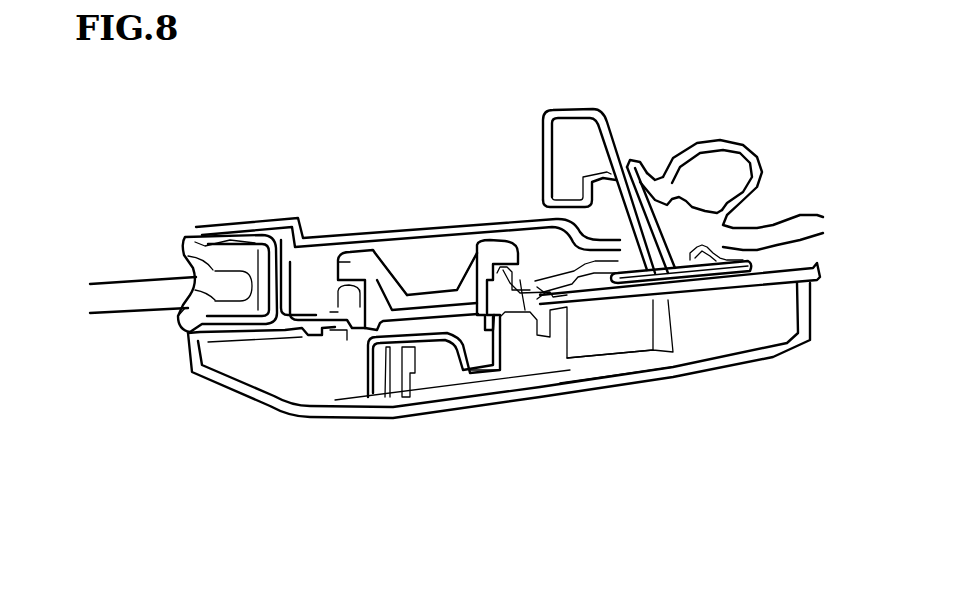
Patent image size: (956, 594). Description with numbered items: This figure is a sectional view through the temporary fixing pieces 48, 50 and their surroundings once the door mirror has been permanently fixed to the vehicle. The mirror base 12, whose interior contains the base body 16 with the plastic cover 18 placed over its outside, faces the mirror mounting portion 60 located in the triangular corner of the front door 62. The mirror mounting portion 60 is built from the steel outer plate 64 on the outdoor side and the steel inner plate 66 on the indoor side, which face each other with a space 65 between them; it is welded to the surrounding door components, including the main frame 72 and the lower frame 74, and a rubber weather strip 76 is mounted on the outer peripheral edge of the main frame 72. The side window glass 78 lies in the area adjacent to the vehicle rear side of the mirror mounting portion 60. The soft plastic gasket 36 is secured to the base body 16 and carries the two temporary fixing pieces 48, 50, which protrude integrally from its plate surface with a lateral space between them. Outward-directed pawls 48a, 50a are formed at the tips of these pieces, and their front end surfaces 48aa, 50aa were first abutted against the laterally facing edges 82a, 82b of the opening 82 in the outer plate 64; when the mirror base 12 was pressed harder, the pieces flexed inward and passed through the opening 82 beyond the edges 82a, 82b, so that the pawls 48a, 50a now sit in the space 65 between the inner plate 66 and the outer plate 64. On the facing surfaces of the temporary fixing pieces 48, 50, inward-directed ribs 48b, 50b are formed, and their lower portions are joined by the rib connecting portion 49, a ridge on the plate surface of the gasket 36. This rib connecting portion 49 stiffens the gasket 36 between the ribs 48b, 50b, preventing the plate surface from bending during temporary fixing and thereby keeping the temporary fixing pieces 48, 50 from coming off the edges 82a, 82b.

The mirror base 12 is at (208, 407).
The base body 16 is at (617, 358).
The cover 18 is at (590, 382).
The gasket 36 is at (627, 298).
The temporary fixing piece 48 is at (482, 262).
The pawl 48a is at (484, 270).
The front end surface 48aa is at (507, 250).
The rib 48b is at (467, 283).
The rib connecting portion 49 is at (433, 283).
The temporary fixing piece 50 is at (369, 262).
The pawl 50a is at (370, 275).
The front end surface 50aa is at (339, 270).
The rib 50b is at (398, 293).
The mirror mounting portion 60 is at (317, 223).
The front door 62 is at (158, 333).
The outer plate 64 is at (540, 290).
The space 65 is at (313, 273).
The inner plate 66 is at (343, 270).
The main frame 72 is at (607, 137).
The lower frame 74 is at (231, 234).
The weather strip 76 is at (727, 145).
The side window glass 78 is at (135, 290).
The opening 82 is at (363, 295).
The edge 82a is at (520, 300).
The edge 82b is at (342, 313).